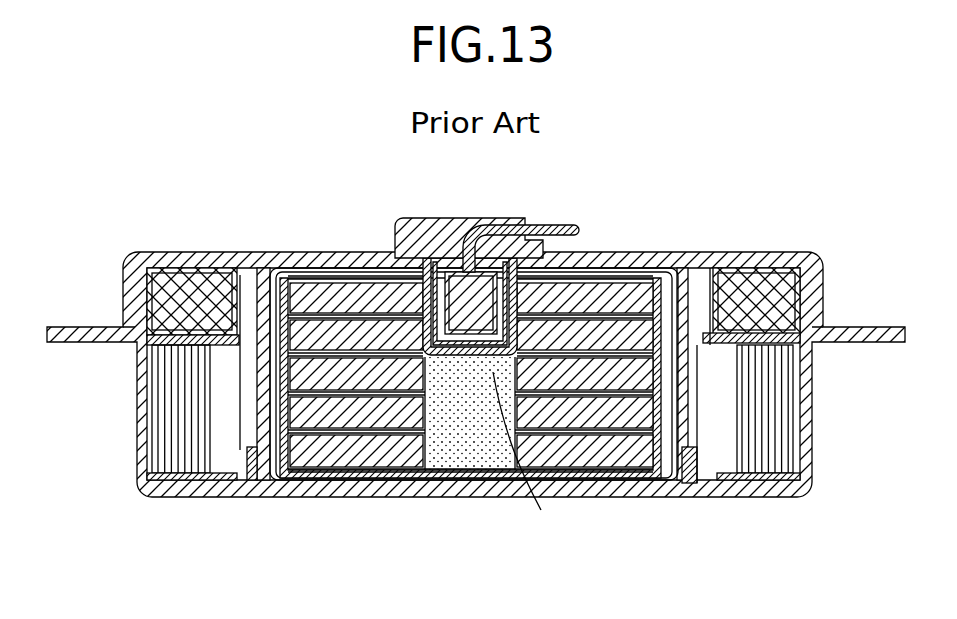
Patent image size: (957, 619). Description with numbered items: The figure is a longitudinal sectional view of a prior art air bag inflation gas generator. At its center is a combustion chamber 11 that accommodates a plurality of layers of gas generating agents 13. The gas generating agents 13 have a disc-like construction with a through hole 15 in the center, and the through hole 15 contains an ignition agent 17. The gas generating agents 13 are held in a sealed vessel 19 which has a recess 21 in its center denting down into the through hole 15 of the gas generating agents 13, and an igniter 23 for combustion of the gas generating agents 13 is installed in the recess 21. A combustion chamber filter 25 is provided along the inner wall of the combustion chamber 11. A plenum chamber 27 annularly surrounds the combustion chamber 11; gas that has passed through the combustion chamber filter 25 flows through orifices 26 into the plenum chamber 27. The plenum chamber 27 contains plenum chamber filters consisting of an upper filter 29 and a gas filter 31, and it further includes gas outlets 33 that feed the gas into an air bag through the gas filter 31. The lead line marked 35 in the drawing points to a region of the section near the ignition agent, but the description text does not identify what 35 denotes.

The combustion chamber 11 is at (470, 480).
The gas generating agents 13 is at (318, 296).
The through hole 15 is at (431, 452).
The ignition agent 17 is at (490, 456).
The sealed vessel 19 is at (365, 478).
The recess 21 is at (447, 290).
The igniter 23 is at (483, 290).
The combustion chamber filter 25 is at (658, 477).
The orifices 26 is at (258, 306).
The plenum chamber 27 is at (732, 455).
The upper filter 29 is at (757, 282).
The gas filter 31 is at (781, 420).
The gas outlets 33 is at (807, 412).
The boundary layer 35 is at (525, 458).